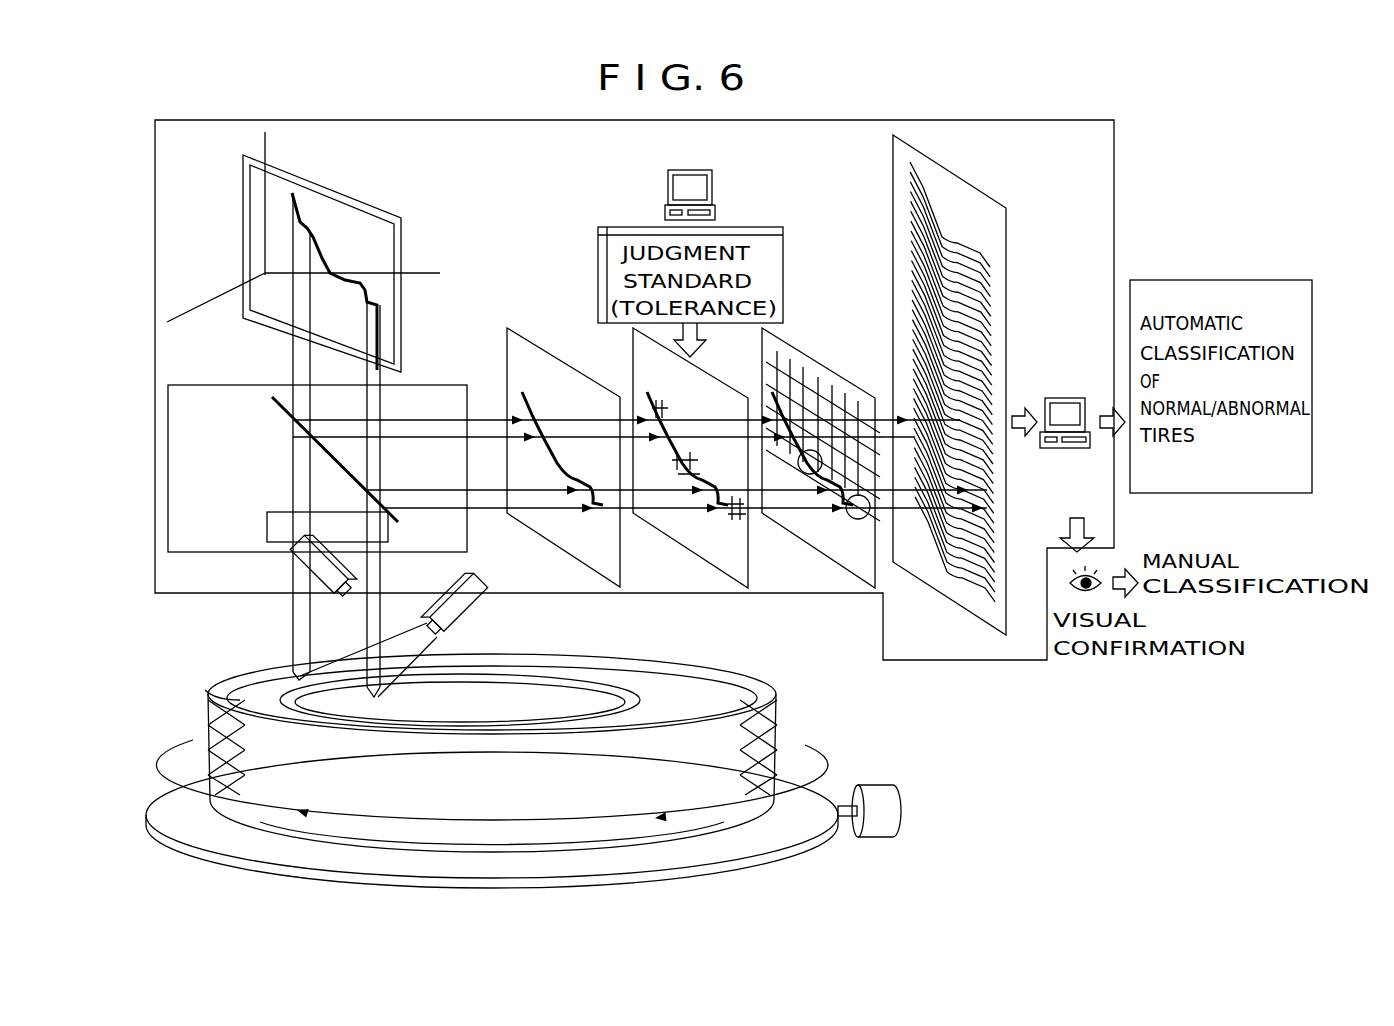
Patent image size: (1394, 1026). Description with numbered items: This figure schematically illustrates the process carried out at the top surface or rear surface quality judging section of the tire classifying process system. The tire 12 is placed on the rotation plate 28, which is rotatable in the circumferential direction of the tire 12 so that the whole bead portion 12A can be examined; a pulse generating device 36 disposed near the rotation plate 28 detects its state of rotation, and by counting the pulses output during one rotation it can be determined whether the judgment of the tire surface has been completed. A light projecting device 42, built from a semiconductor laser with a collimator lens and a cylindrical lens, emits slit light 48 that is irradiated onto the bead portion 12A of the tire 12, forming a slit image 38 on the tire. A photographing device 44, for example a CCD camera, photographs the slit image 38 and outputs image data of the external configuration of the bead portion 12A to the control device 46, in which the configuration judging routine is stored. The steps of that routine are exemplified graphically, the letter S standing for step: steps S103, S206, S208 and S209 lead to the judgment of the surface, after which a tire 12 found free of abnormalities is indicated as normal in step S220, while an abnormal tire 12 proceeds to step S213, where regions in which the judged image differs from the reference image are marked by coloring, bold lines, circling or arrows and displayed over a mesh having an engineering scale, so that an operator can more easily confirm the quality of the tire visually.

The tire 12 is at (775, 717).
The bead portion 12A is at (673, 697).
The rotation plate 28 is at (792, 845).
The pulse generating device 36 is at (905, 760).
The slit image 38 is at (212, 675).
The light projecting device 42 is at (477, 613).
The photographing device 44 is at (296, 560).
The control device 46 is at (1114, 175).
The slit light 48 is at (408, 638).
The reference profile display step S103 is at (402, 243).
The light section image capture step S206 is at (432, 384).
The profile extraction step S208 is at (550, 353).
The feature point extraction step S209 is at (672, 543).
The step 213 S213 is at (803, 355).
The step 220 S220 is at (1068, 397).